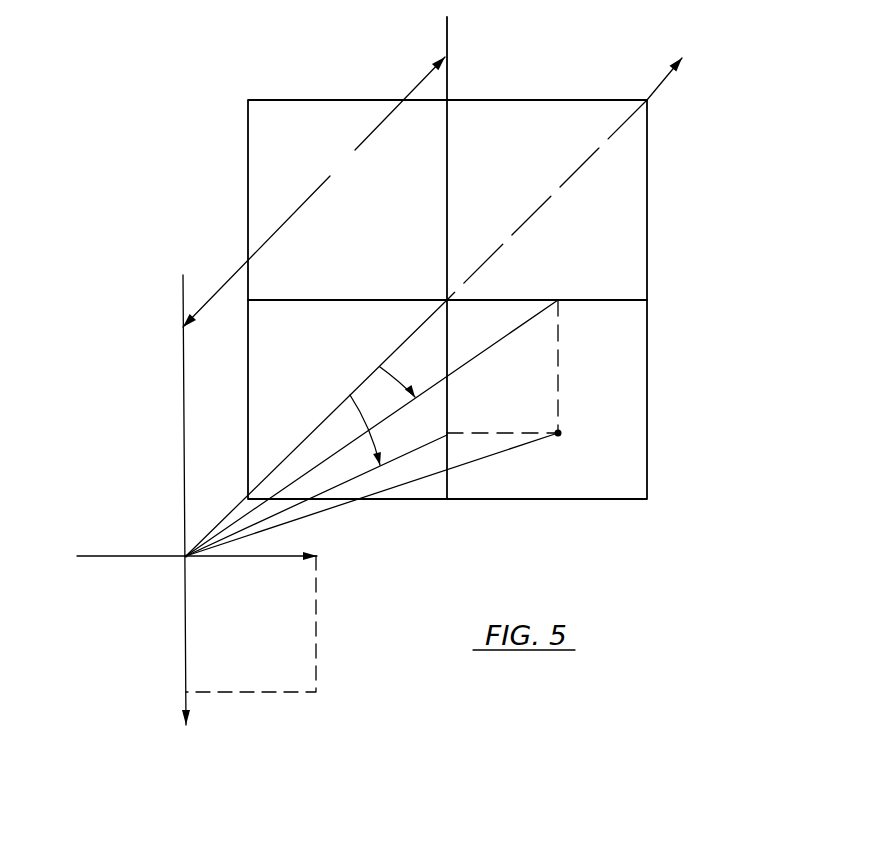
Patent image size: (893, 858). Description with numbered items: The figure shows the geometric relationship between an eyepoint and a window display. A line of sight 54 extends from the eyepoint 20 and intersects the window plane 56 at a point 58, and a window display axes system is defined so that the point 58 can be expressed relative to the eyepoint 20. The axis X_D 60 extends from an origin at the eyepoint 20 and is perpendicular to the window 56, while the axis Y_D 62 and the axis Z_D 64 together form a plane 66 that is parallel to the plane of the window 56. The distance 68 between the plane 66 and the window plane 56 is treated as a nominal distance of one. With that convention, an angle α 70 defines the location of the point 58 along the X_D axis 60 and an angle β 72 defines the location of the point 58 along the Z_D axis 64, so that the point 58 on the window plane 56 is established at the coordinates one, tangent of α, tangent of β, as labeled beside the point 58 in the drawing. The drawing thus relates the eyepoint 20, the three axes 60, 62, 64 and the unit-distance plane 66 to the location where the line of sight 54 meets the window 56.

The eyepoint 20 is at (186, 557).
The line of sight 54 is at (425, 482).
The window plane 56 is at (265, 157).
The point 58 is at (560, 432).
The axis X_D 60 is at (653, 88).
The axis Y_D 62 is at (258, 557).
The axis Z_D 64 is at (186, 659).
The plane 66 is at (295, 662).
The distance 68 is at (377, 123).
The angle α 70 is at (380, 367).
The angle β 72 is at (350, 395).